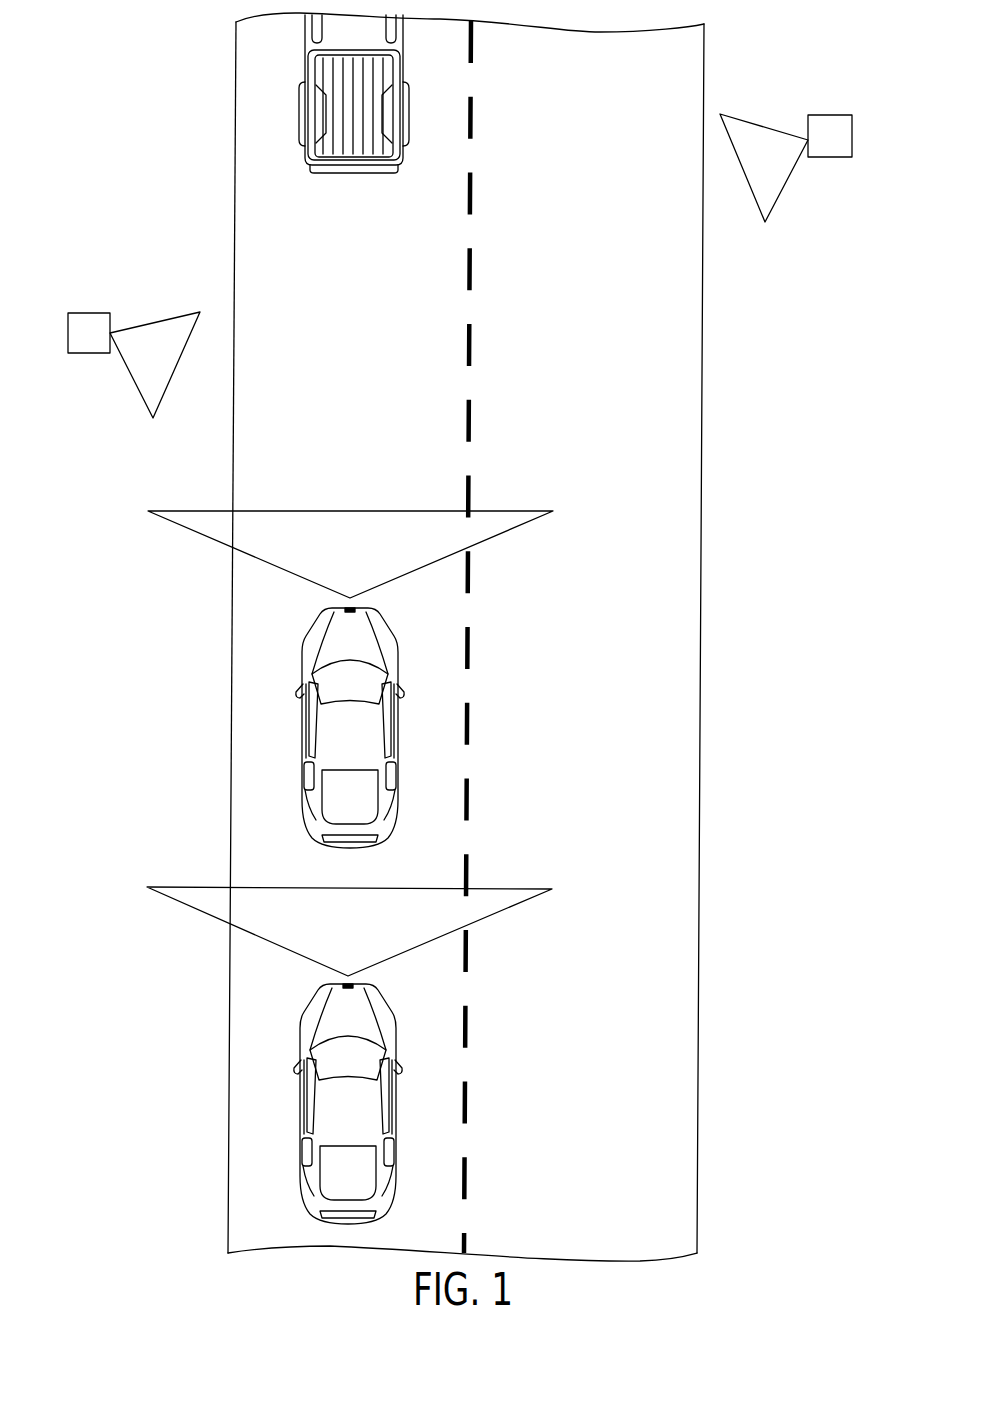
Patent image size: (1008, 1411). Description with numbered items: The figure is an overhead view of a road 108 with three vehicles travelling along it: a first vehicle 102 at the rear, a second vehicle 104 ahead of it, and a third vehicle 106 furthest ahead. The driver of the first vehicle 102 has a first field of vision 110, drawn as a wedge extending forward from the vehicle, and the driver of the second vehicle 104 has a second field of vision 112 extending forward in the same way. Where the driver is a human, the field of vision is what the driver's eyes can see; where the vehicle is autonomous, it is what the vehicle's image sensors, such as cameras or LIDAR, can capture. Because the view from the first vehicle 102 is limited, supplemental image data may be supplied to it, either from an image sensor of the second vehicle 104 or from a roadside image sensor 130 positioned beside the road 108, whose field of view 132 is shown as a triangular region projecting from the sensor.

The first vehicle 102 is at (398, 1112).
The second vehicle 104 is at (400, 732).
The third vehicle 106 is at (402, 65).
The road 108 is at (235, 262).
The first field of vision 110 is at (486, 918).
The second field of vision 112 is at (485, 542).
The roadside image sensor 130 is at (88, 345).
The field of view 132 is at (138, 375).